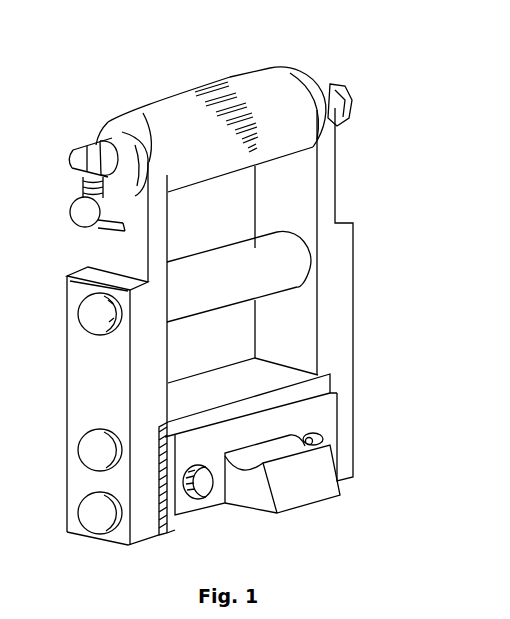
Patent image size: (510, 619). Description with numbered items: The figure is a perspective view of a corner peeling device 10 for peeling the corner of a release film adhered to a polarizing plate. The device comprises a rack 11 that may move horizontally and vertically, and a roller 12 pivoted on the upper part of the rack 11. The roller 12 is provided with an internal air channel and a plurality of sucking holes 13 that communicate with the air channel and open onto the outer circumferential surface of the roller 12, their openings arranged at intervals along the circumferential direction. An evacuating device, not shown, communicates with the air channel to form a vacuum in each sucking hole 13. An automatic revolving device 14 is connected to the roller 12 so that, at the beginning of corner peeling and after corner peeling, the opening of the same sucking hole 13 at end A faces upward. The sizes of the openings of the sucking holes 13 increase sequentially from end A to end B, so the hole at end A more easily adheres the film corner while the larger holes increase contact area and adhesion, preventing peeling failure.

The corner peeling device 10 is at (356, 207).
The rack 11 is at (332, 307).
The roller 12 is at (288, 109).
The sucking holes 13 is at (243, 95).
The automatic revolving device 14 is at (100, 228).
The end A is at (250, 152).
The end B is at (194, 90).